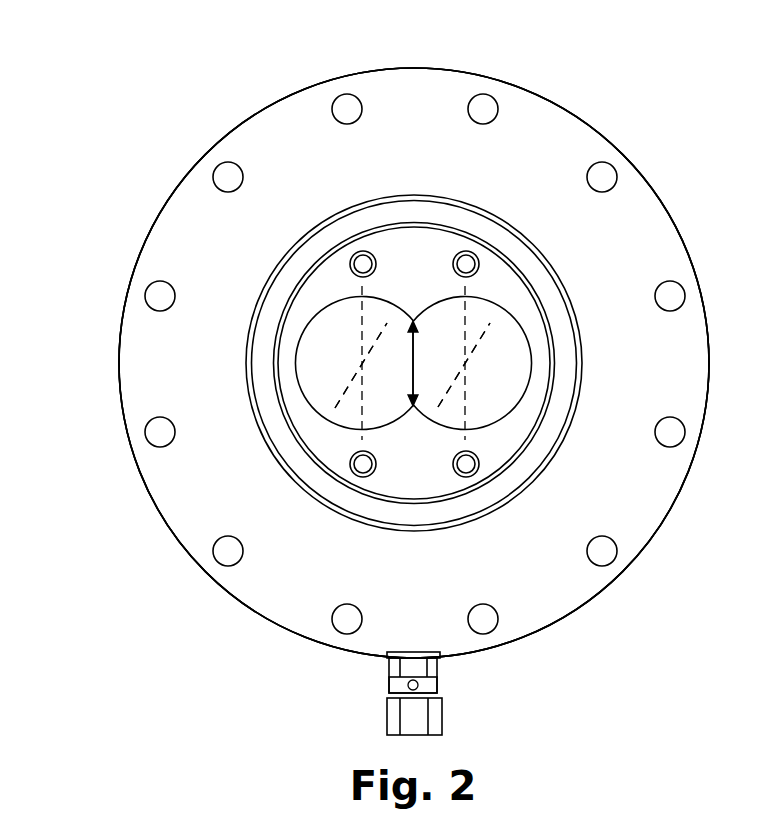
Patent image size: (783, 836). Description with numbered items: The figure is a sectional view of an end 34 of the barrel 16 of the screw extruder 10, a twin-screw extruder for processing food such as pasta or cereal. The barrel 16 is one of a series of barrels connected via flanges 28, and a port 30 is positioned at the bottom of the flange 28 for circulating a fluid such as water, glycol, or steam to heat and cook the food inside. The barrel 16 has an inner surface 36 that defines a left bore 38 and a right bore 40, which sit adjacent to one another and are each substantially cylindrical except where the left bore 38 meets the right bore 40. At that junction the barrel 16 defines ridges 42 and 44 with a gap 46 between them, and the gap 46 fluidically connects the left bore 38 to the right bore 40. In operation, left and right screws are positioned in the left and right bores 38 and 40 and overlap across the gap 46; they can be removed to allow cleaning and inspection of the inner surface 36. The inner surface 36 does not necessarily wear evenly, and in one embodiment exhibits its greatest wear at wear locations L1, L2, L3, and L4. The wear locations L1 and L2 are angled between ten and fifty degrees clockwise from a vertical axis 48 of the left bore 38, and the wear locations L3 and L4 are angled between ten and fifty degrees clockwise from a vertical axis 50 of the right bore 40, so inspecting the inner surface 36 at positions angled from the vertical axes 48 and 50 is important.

The screw extruder 10 is at (113, 122).
The barrel 16 is at (137, 260).
The flange 28 is at (180, 552).
The port 30 is at (393, 713).
The end 34 is at (217, 490).
The inner surface 36 is at (312, 326).
The left bore 38 is at (308, 358).
The right bore 40 is at (507, 377).
The ridge 42 is at (413, 320).
The ridge 44 is at (413, 408).
The gap 46 is at (420, 368).
The vertical axis 48 is at (358, 315).
The vertical axis 50 is at (458, 314).
The wear location L1 is at (390, 316).
The wear location L2 is at (334, 428).
The wear location L3 is at (495, 303).
The wear location L4 is at (428, 412).